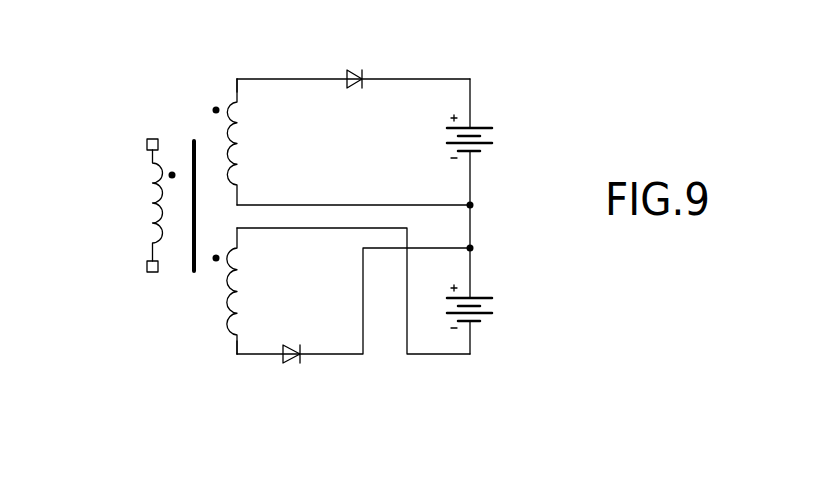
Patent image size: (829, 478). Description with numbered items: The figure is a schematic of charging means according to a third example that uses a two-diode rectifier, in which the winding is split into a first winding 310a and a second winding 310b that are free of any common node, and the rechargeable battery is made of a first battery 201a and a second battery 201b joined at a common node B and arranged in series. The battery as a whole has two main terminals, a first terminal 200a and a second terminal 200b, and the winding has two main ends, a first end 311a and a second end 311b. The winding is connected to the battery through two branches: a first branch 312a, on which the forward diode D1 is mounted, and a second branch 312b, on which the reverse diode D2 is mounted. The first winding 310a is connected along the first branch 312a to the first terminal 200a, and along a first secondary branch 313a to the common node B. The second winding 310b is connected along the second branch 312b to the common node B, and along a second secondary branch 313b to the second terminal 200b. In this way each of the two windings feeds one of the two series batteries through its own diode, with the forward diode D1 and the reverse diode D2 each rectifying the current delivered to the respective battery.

The first winding 310a is at (222, 133).
The first end 311a is at (237, 78).
The first branch 312a is at (285, 79).
The first secondary branch 313a is at (363, 205).
The forward diode D1 is at (349, 70).
The first terminal 200a is at (470, 79).
The first battery 201a is at (490, 136).
The common node B is at (476, 205).
The second winding 310b is at (222, 280).
The second end 311b is at (237, 343).
The second branch 312b is at (345, 357).
The second secondary branch 313b is at (272, 228).
The reverse diode D2 is at (292, 358).
The second terminal 200b is at (470, 354).
The second battery 201b is at (490, 305).